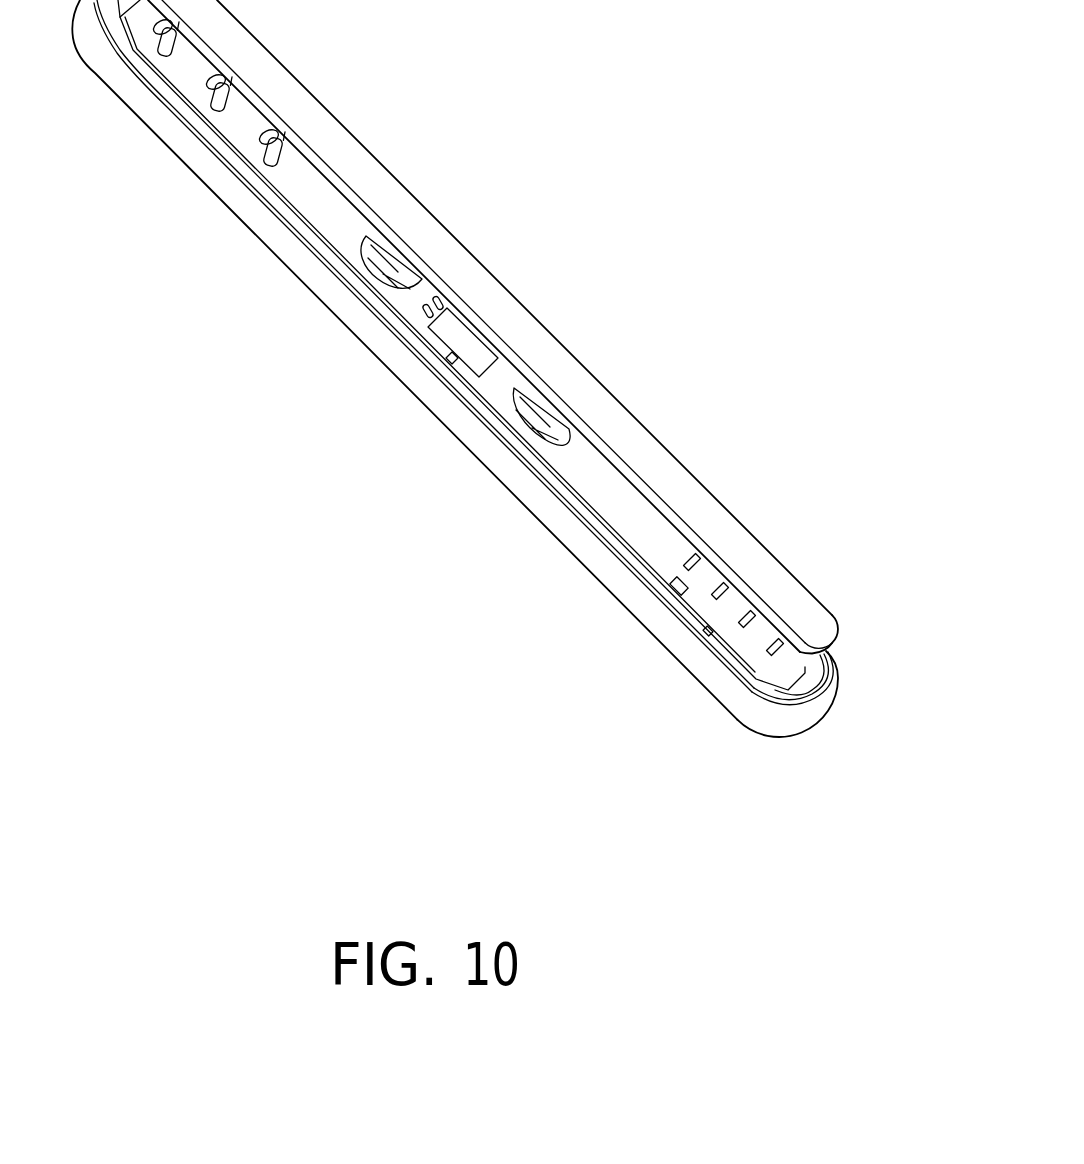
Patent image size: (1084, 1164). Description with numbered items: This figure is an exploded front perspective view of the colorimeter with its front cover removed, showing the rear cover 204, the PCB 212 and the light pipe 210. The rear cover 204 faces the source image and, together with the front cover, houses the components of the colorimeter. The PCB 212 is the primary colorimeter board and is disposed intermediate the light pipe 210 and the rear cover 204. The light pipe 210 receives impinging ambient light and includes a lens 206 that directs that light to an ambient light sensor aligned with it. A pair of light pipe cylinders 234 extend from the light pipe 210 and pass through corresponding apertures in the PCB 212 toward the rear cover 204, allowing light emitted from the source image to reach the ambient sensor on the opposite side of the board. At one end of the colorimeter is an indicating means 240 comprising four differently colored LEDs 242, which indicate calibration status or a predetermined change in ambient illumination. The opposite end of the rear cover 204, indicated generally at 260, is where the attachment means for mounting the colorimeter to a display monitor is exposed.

The rear cover 204 is at (457, 412).
The lens 206 is at (457, 337).
The light pipe 210 is at (587, 397).
The PCB 212 is at (617, 493).
The light pipe cylinders 234 is at (393, 266).
The indicating means 240 is at (806, 537).
The LEDs 242 is at (684, 571).
The opposite end of the rear cover 260 is at (828, 727).